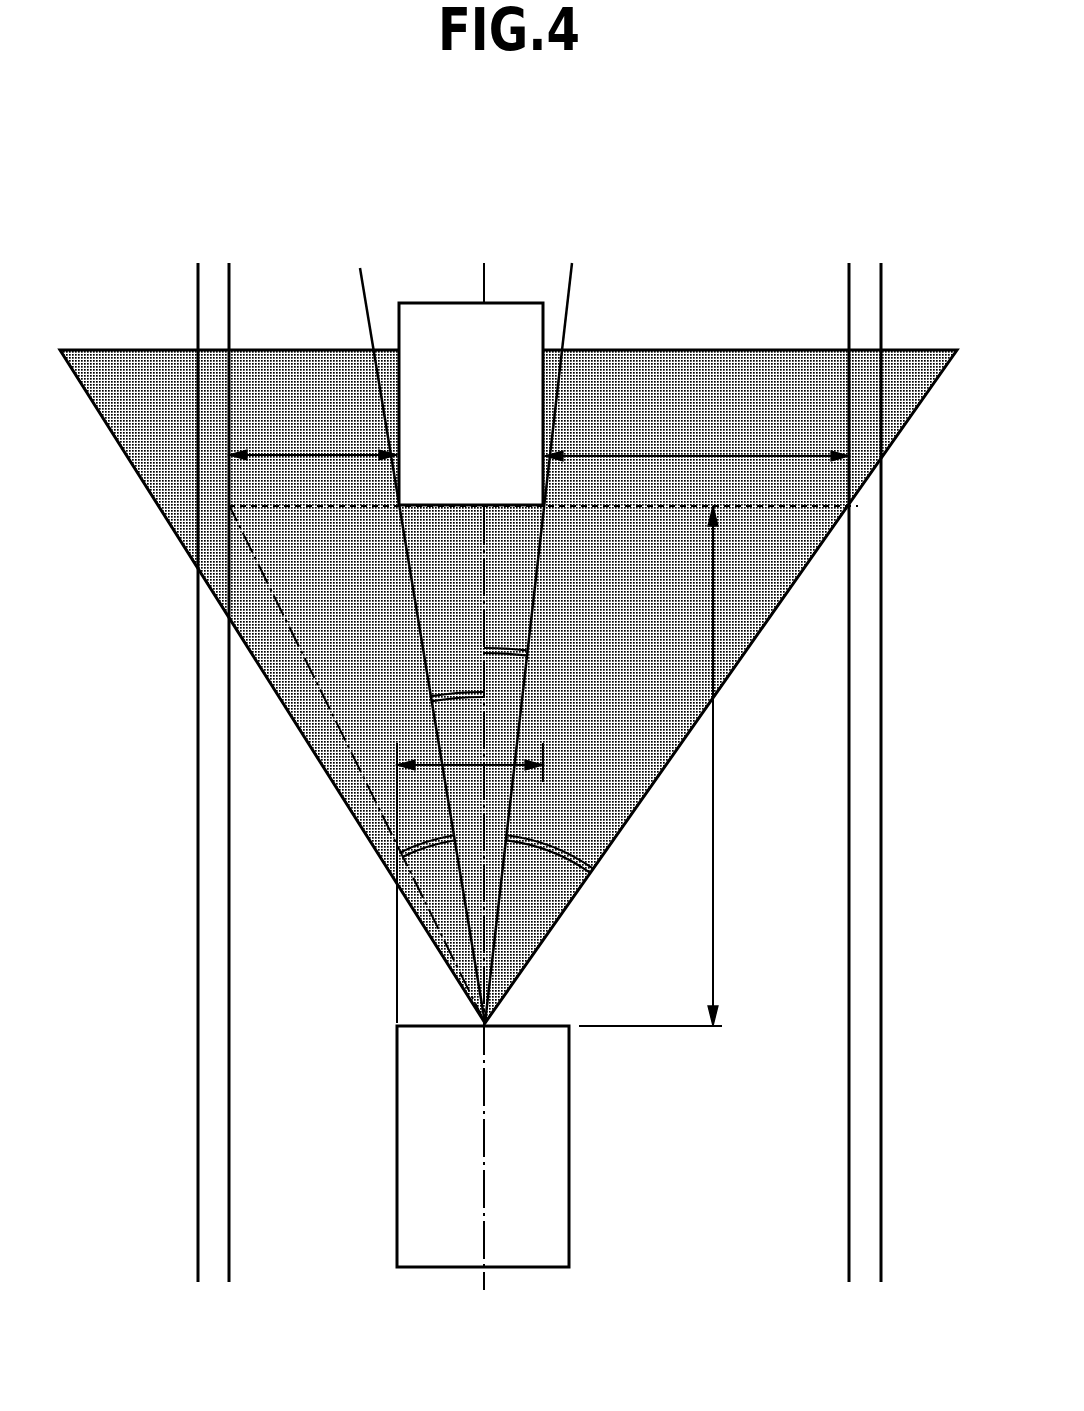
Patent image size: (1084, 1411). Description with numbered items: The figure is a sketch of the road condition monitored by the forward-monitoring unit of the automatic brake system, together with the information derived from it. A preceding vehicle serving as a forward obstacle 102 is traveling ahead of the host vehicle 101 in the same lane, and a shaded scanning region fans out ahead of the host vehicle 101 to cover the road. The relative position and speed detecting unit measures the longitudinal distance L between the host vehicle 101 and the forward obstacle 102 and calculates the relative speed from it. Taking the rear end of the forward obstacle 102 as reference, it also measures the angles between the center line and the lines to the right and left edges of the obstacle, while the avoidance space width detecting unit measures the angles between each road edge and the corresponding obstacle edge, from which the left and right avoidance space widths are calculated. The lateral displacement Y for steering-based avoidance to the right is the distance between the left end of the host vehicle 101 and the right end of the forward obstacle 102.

The host vehicle 101 is at (552, 1088).
The forward obstacle (preceding vehicle) 102 is at (523, 302).
The lateral displacement Y is at (470, 880).
The longitudinal distance L is at (680, 766).